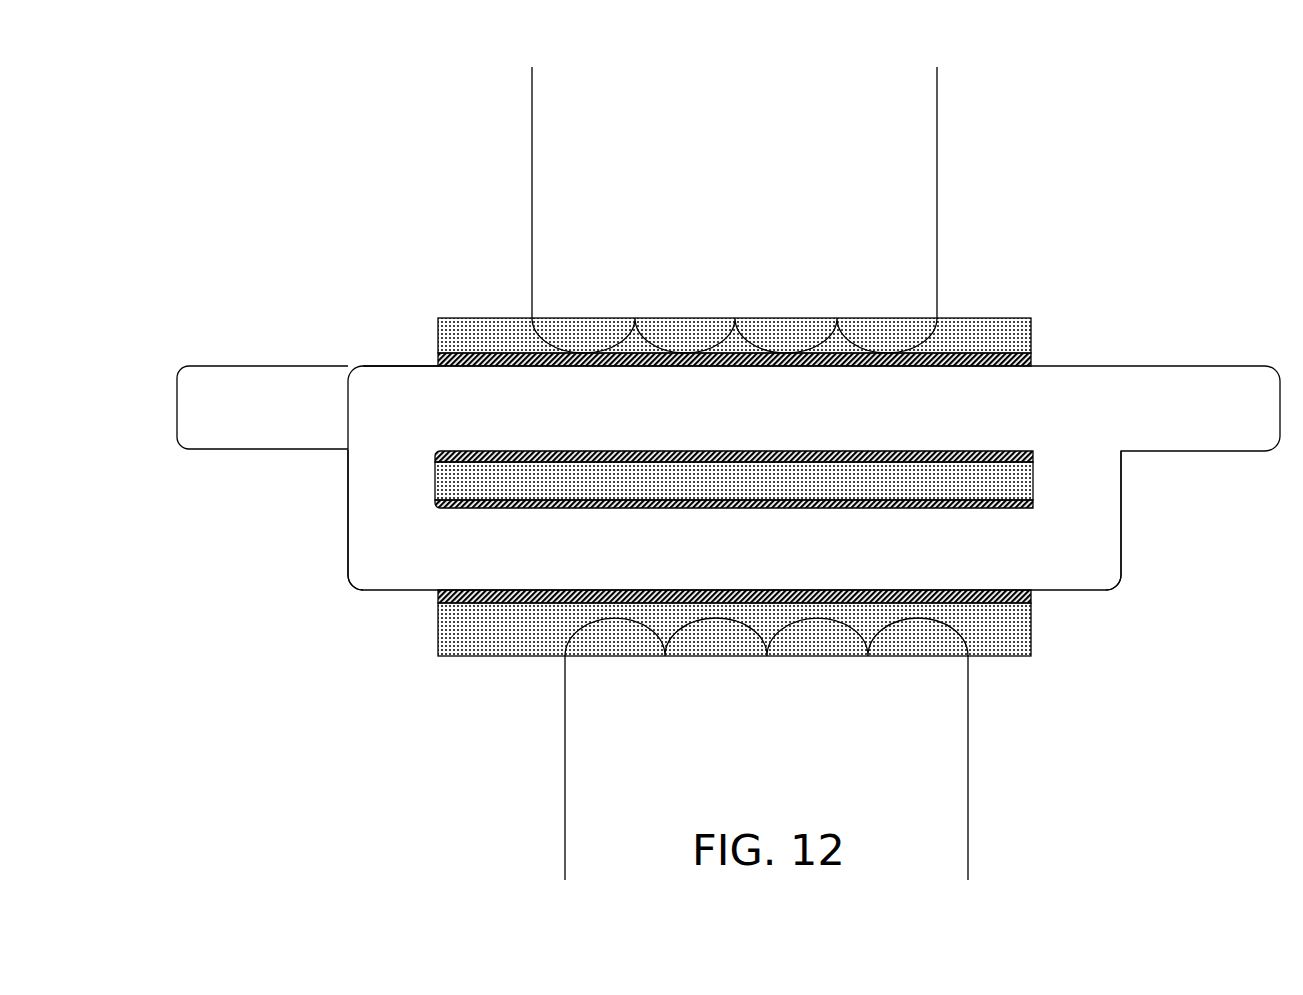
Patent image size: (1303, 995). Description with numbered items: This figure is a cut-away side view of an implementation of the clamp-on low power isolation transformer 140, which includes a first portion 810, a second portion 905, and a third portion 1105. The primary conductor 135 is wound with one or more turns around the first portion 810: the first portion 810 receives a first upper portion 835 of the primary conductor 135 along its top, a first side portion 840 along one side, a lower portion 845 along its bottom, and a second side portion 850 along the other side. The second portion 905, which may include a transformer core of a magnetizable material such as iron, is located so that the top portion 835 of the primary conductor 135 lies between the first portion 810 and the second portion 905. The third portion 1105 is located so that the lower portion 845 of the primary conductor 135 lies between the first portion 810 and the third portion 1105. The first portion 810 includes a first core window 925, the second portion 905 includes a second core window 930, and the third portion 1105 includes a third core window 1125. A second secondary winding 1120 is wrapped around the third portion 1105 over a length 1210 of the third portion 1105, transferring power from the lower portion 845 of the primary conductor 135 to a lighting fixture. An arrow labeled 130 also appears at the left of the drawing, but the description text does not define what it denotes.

The heat sink assembly 130 is at (150, 400).
The primary conductor 135 is at (282, 363).
The clamp-on isolation transformer 140 is at (1047, 130).
The first portion 810 is at (1033, 490).
The first upper portion of the primary conductor 835 is at (430, 365).
The first side portion of the primary conductor 840 is at (1121, 570).
The lower portion of the primary conductor 845 is at (388, 590).
The second side portion of the primary conductor 850 is at (348, 512).
The second portion 905 is at (1011, 318).
The first core window 925 is at (1033, 455).
The second core window 930 is at (1033, 358).
The third portion 1105 is at (1017, 658).
The second secondary winding 1120 is at (968, 801).
The third core window 1125 is at (1030, 602).
The length 1210 is at (968, 778).